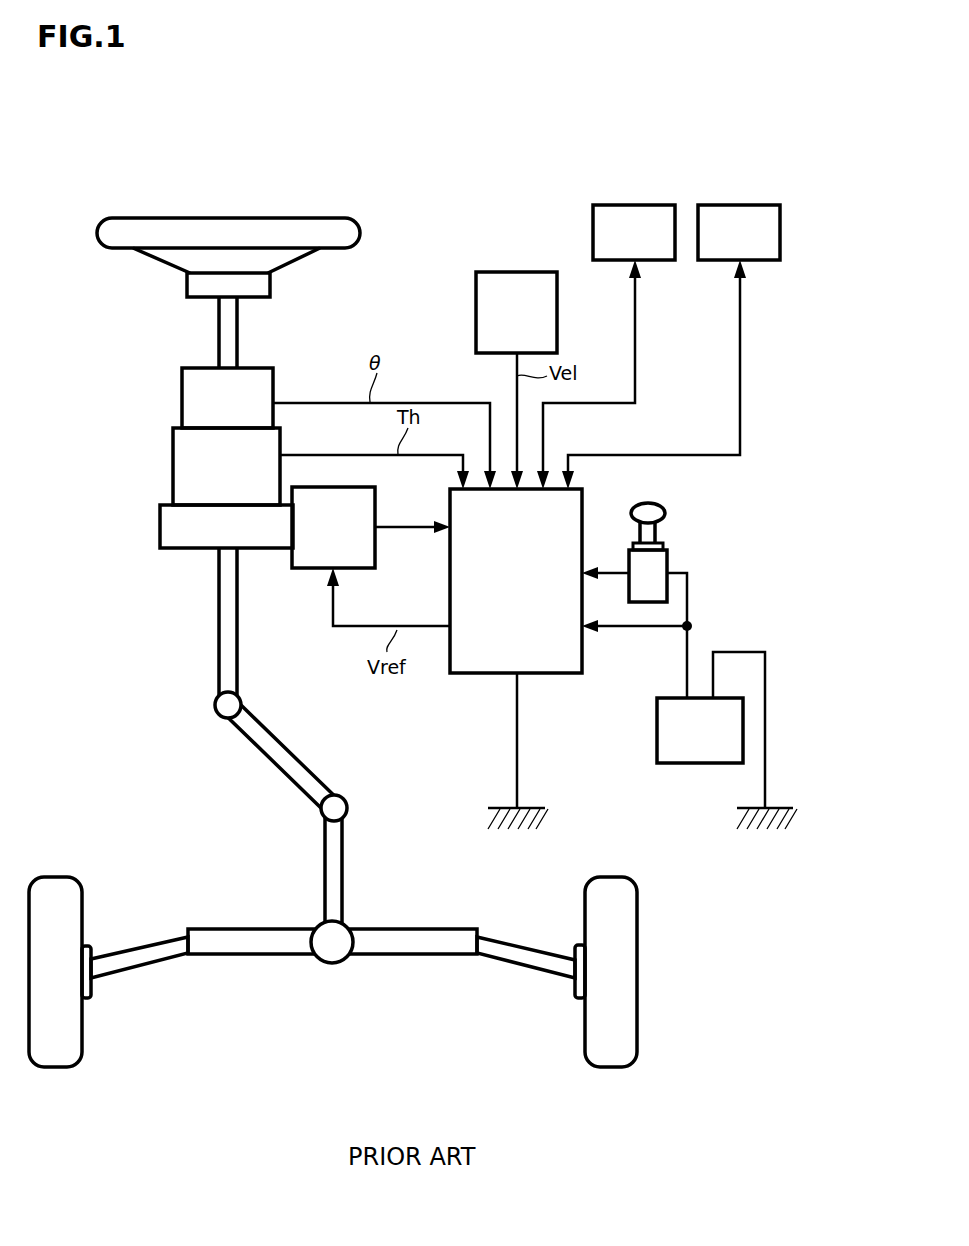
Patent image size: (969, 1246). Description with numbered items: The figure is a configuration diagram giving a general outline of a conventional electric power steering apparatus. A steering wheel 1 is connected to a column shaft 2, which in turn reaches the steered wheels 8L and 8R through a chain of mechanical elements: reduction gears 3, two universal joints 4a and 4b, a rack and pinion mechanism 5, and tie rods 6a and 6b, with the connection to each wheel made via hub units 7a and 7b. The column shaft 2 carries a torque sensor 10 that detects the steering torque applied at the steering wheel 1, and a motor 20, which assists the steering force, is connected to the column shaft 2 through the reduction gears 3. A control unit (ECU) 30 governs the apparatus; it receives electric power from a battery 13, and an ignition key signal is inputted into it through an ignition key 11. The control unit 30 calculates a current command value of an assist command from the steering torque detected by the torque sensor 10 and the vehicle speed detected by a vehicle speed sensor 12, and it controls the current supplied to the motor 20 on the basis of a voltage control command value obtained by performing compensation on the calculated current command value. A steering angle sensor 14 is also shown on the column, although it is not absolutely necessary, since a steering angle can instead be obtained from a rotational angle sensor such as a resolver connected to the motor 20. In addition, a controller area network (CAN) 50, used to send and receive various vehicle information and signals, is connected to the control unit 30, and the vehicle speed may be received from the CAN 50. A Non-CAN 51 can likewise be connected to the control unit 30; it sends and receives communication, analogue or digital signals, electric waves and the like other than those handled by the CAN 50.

The steering wheel 1 is at (360, 228).
The column shaft 2 is at (218, 340).
The reduction gears 3 is at (160, 533).
The universal joint 4a is at (215, 714).
The universal joint 4b is at (321, 816).
The rack and pinion mechanism 5 is at (350, 922).
The tie rod 6a is at (122, 948).
The tie rod 6b is at (508, 945).
The hub unit 7a is at (92, 995).
The hub unit 7b is at (575, 995).
The steered wheel 8L is at (82, 1055).
The steered wheel 8R is at (585, 1055).
The torque sensor 10 is at (173, 458).
The ignition key 11 is at (665, 513).
The vehicle speed sensor 12 is at (557, 283).
The battery 13 is at (657, 722).
The steering angle sensor 14 is at (182, 396).
The motor 20 is at (375, 490).
The control unit (ECU) 30 is at (582, 493).
The controller area network (CAN) 50 is at (766, 205).
The Non-CAN 51 is at (660, 205).